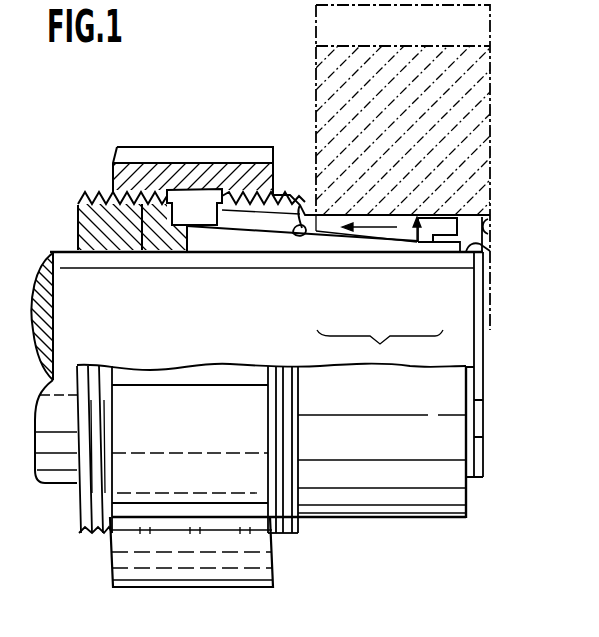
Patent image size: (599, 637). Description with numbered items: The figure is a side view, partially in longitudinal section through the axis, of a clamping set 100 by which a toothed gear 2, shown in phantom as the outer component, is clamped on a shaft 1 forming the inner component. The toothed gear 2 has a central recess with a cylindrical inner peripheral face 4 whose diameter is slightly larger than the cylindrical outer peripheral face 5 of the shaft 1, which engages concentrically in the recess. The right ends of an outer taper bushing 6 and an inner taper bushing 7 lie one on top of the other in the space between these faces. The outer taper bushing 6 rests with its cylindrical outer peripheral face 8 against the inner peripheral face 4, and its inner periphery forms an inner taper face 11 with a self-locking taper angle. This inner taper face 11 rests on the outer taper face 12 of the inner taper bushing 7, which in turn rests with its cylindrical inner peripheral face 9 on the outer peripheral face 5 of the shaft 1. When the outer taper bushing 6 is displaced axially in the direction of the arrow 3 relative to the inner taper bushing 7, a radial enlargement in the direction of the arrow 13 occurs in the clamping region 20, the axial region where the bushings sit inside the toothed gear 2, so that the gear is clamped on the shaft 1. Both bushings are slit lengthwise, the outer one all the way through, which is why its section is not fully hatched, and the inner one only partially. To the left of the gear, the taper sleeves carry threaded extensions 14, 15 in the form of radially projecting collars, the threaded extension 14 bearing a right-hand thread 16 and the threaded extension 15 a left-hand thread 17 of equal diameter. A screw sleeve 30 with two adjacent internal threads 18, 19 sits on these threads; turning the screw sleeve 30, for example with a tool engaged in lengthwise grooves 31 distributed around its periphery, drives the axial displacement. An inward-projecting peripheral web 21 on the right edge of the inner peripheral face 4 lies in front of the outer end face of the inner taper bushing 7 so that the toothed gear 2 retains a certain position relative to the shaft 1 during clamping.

The clamping set 100 is at (198, 93).
The shaft 1 is at (463, 330).
The toothed gear 2 is at (490, 127).
The arrow 3 is at (380, 232).
The cylindrical inner peripheral face 4 is at (487, 225).
The cylindrical outer peripheral face 5 is at (478, 248).
The outer taper bushing 6 is at (327, 232).
The inner taper bushing 7 is at (354, 247).
The cylindrical outer peripheral face 8 is at (305, 198).
The cylindrical inner peripheral face 9 is at (203, 253).
The inner taper face 11 is at (406, 243).
The outer taper face 12 is at (307, 240).
The arrow 13 is at (437, 243).
The threaded extension 14 is at (267, 215).
The threaded extension 15 is at (112, 253).
The right-hand thread 16 is at (288, 190).
The left-hand thread 17 is at (110, 206).
The internal thread 18 is at (235, 212).
The internal thread 19 is at (142, 253).
The clamping region 20 is at (380, 344).
The peripheral web 21 is at (488, 232).
The screw sleeve 30 is at (172, 158).
The lengthwise grooves 31 is at (213, 157).